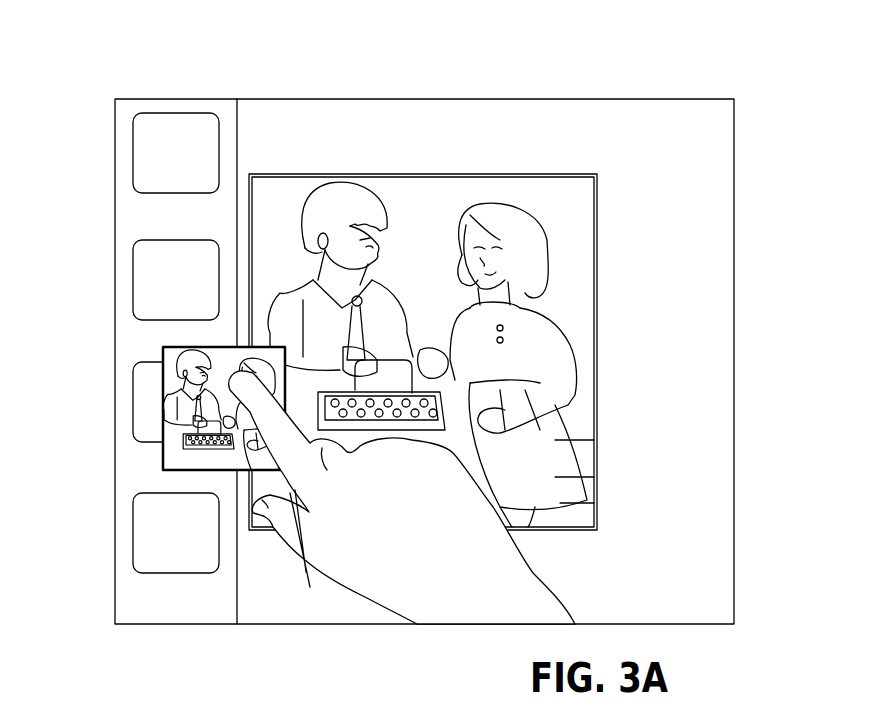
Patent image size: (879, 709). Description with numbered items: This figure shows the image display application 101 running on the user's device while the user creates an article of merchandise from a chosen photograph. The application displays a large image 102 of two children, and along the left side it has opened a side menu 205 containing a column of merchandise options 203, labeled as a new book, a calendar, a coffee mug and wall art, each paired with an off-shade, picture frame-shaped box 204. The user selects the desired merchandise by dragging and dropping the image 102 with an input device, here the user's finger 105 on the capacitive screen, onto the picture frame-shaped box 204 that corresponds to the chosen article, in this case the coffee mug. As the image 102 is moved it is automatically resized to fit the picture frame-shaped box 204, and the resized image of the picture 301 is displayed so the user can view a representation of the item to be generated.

The image display application 101 is at (471, 334).
The image 102 is at (432, 278).
The user's finger 105 is at (285, 477).
The merchandise options 203 is at (136, 383).
The picture frame-shaped boxes 204 is at (140, 335).
The side menu 205 is at (259, 320).
The image of the picture 301 is at (157, 404).